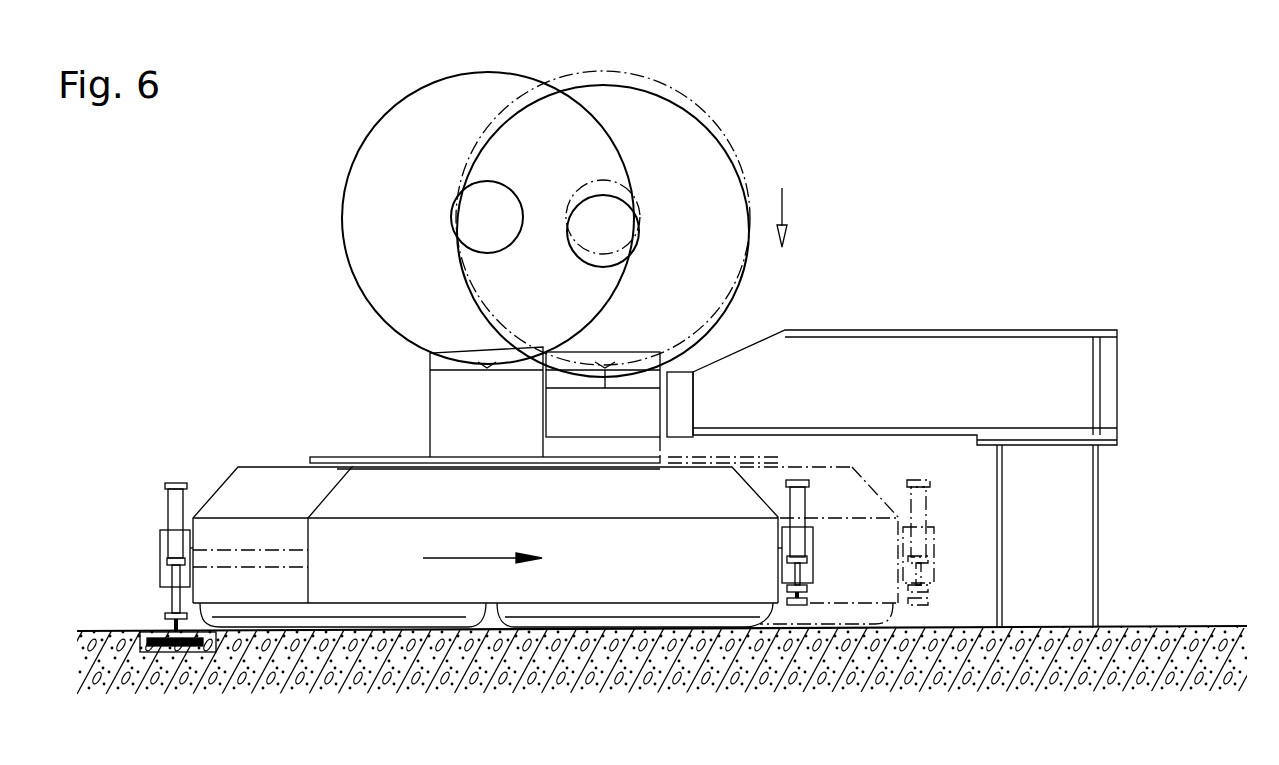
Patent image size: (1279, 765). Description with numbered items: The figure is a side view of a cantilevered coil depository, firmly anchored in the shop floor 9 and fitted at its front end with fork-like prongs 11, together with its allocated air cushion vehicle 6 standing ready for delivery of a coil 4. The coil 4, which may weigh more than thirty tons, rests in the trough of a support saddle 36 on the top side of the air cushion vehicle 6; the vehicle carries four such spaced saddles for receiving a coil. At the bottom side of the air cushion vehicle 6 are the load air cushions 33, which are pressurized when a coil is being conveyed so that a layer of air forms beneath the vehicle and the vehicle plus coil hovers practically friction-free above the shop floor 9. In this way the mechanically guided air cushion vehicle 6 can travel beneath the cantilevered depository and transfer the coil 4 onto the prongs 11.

The coil 4 is at (348, 178).
The air cushion vehicle 6 is at (262, 480).
The support saddle 36 is at (440, 413).
The prong 11 is at (567, 417).
The load air cushion 33 is at (567, 608).
The shop floor 9 is at (1222, 626).